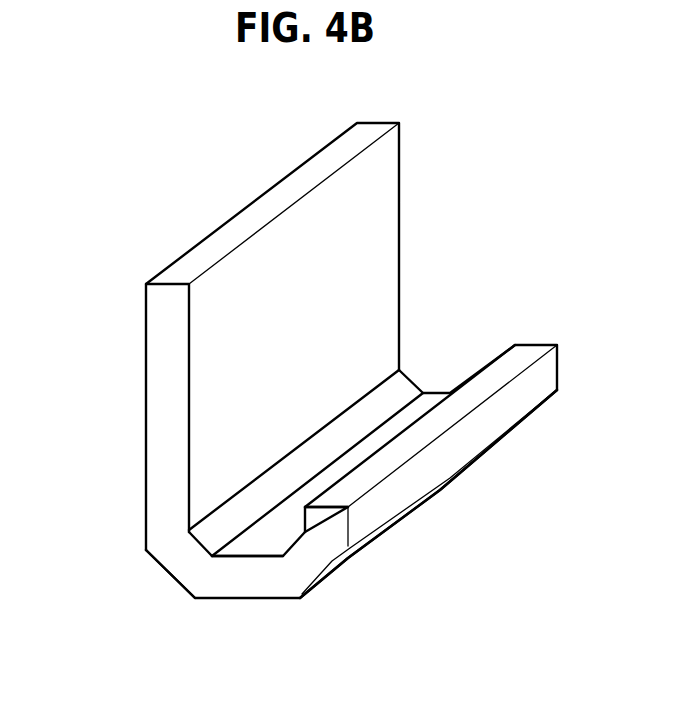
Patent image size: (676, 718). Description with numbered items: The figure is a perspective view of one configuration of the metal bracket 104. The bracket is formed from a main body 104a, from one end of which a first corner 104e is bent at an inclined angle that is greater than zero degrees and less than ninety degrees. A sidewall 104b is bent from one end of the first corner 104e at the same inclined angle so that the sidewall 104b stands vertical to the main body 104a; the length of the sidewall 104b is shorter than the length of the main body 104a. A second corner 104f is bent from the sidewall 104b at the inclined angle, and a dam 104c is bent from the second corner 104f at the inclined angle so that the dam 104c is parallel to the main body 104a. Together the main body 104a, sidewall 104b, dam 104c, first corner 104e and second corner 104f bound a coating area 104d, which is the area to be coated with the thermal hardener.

The metal bracket 104 is at (190, 148).
The main body 104a is at (158, 433).
The sidewall 104b is at (267, 582).
The dam 104c is at (335, 524).
The coating area 104d is at (268, 535).
The first corner 104e is at (182, 565).
The second corner 104f is at (313, 565).